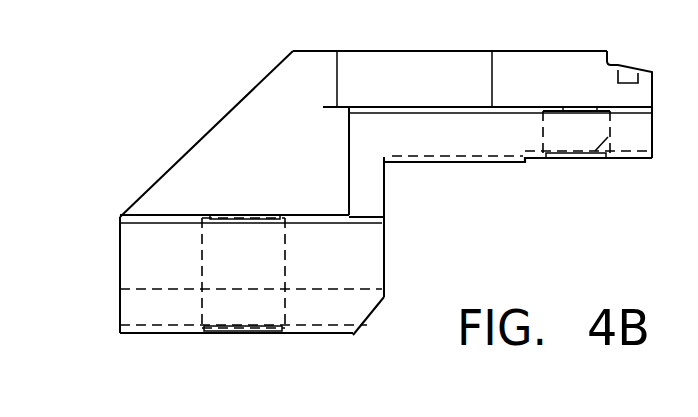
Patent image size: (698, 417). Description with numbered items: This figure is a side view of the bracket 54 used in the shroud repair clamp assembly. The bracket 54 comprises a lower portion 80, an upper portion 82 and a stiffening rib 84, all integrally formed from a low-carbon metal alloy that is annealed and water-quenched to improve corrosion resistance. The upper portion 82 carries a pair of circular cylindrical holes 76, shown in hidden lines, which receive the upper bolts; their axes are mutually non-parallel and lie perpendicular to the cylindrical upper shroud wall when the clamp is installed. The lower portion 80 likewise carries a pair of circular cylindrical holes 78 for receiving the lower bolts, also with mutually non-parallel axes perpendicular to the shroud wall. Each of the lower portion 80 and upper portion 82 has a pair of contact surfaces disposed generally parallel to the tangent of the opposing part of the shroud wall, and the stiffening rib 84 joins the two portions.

The bracket 54 is at (197, 125).
The stiffening rib 84 is at (235, 107).
The upper portion 82 is at (415, 142).
The circular cylindrical holes 76 is at (583, 159).
The circular cylindrical holes 78 is at (200, 268).
The lower portion 80 is at (150, 335).